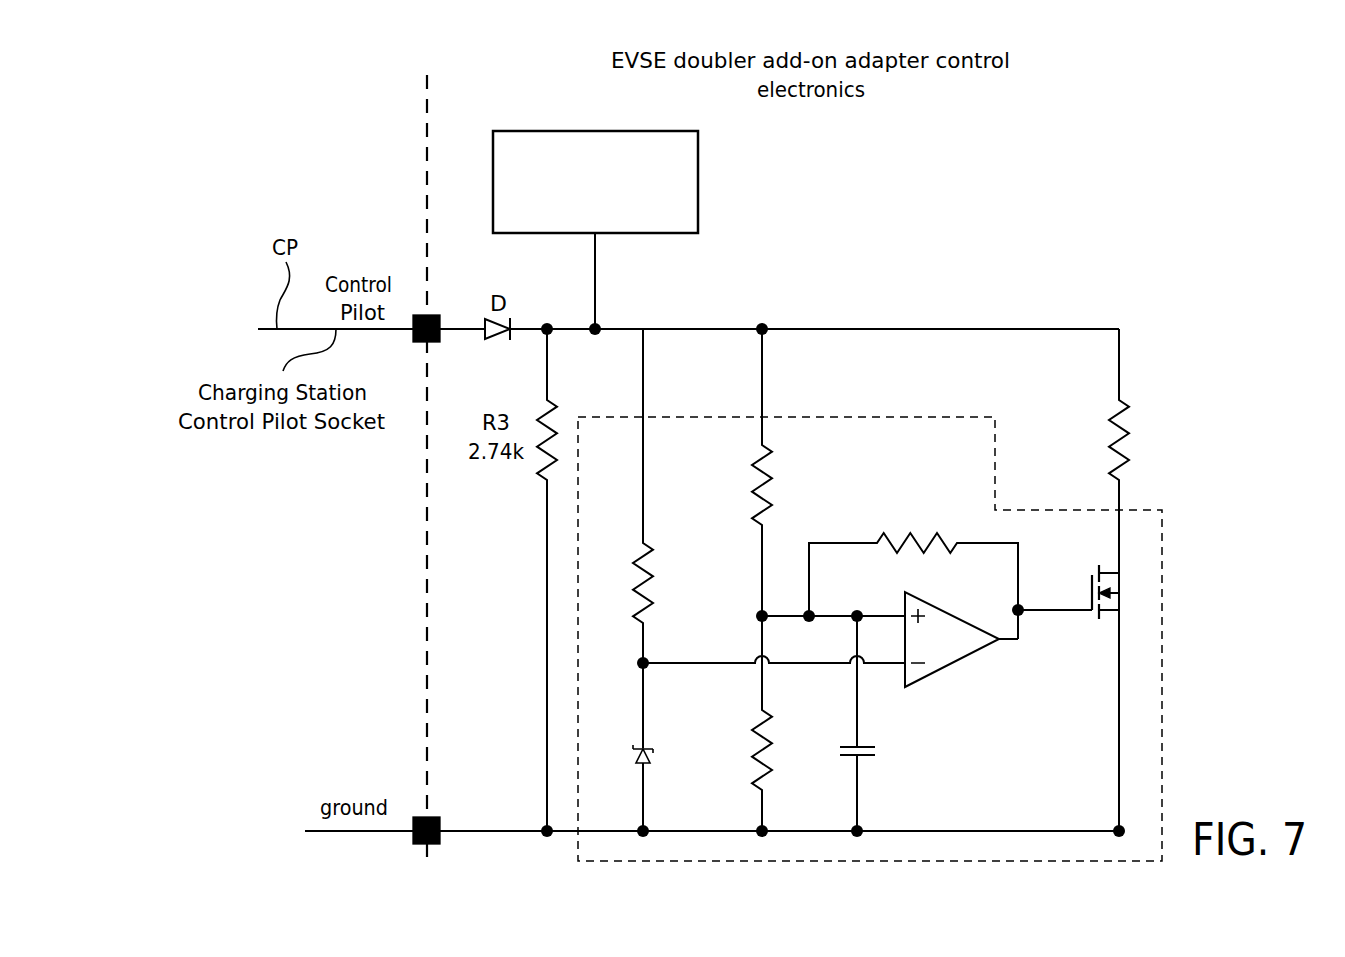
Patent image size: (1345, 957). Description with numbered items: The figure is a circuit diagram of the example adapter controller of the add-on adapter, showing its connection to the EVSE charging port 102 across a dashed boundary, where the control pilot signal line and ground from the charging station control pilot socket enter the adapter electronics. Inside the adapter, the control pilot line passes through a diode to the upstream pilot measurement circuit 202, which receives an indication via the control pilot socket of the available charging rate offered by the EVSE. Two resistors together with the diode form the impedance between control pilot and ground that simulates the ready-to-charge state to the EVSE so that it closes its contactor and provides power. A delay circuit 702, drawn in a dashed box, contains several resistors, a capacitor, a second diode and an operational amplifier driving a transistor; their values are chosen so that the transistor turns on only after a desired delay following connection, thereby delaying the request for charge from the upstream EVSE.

The EVSE charging port 102 is at (291, 182).
The upstream pilot measurement circuit 202 is at (597, 131).
The delay circuit 702 is at (861, 405).